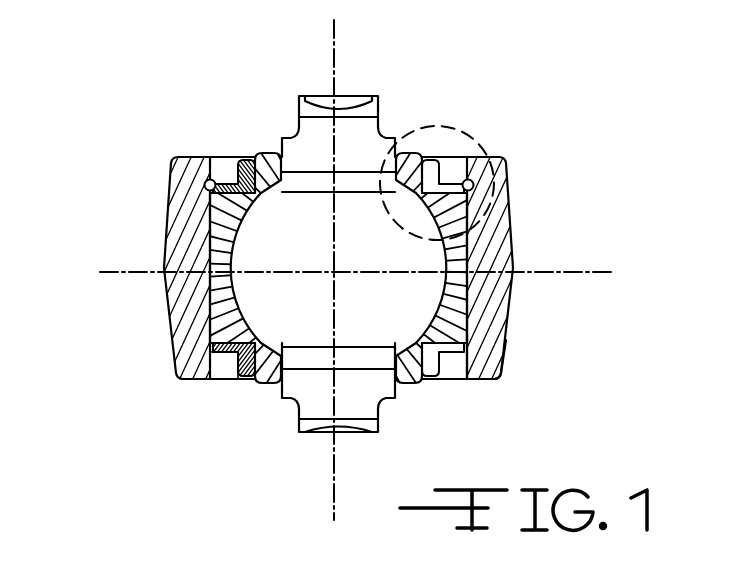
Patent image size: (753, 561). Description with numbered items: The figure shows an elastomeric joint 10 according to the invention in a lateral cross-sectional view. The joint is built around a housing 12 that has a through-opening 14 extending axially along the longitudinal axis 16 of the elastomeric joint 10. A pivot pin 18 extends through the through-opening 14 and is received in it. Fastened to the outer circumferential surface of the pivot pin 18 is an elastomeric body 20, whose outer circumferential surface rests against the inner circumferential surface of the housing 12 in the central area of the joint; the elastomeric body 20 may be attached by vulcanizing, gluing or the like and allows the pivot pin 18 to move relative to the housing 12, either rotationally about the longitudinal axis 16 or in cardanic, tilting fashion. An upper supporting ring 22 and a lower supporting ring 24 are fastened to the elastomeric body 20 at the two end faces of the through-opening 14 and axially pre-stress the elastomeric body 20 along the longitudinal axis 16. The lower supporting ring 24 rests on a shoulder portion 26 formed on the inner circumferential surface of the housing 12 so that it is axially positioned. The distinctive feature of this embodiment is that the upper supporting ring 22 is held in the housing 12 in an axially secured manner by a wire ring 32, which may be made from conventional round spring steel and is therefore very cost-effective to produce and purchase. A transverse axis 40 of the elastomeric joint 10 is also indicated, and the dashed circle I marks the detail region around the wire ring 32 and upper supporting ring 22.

The elastomeric joint 10 is at (550, 364).
The housing 12 is at (162, 306).
The through-opening 14 is at (230, 373).
The longitudinal axis 16 is at (332, 30).
The pivot pin 18 is at (258, 237).
The elastomeric body 20 is at (515, 205).
The upper supporting ring 22 is at (216, 190).
The lower supporting ring 24 is at (230, 348).
The shoulder portion 26 is at (513, 343).
The wire ring 32 is at (204, 183).
The transverse axis 40 is at (569, 273).
The detail region I is at (487, 153).